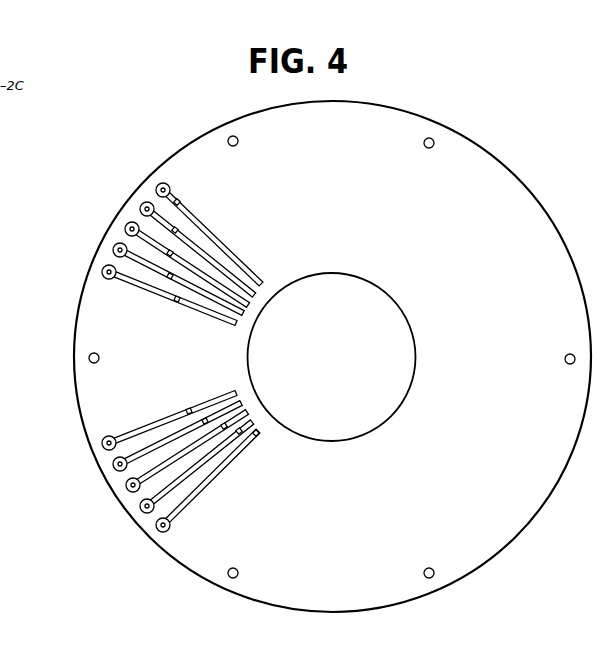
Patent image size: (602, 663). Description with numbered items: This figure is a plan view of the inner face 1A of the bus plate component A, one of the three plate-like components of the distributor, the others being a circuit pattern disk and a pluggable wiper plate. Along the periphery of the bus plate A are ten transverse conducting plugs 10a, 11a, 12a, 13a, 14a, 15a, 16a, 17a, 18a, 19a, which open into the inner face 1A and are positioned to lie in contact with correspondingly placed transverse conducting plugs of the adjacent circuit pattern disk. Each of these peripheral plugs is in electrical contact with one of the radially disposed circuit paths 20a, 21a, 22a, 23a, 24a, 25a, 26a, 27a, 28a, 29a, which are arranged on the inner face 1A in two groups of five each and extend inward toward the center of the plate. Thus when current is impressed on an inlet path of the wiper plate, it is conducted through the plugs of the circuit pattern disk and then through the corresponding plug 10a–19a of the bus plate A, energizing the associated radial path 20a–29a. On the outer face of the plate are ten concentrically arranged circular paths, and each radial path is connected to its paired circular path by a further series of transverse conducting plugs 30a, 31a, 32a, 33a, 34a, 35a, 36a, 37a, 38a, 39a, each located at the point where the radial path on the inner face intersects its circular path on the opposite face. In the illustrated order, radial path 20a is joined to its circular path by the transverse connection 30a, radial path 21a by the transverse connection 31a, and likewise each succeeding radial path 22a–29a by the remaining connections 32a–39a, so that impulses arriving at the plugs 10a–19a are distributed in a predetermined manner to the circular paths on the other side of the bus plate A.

The bus plate component A is at (491, 149).
The inner face of the bus plate 1A is at (528, 222).
The transverse conducting plug 10a is at (160, 184).
The transverse conducting plug 11a is at (141, 204).
The transverse conducting plug 12a is at (126, 226).
The transverse conducting plug 13a is at (114, 248).
The transverse conducting plug 14a is at (102, 272).
The transverse conducting plug 15a is at (103, 446).
The transverse conducting plug 16a is at (114, 467).
The transverse conducting plug 17a is at (127, 489).
The transverse conducting plug 18a is at (141, 512).
The transverse conducting plug 19a is at (159, 532).
The radially disposed circuit path 20a is at (172, 196).
The radially disposed circuit path 21a is at (172, 228).
The radially disposed circuit path 22a is at (159, 243).
The radially disposed circuit path 23a is at (153, 263).
The radially disposed circuit path 24a is at (128, 281).
The radially disposed circuit path 25a is at (121, 437).
The radially disposed circuit path 26a is at (132, 458).
The radially disposed circuit path 27a is at (140, 478).
The radially disposed circuit path 28a is at (155, 499).
The radially disposed circuit path 29a is at (173, 512).
The transverse connection 30a is at (182, 202).
The transverse connection 31a is at (178, 229).
The transverse connection 32a is at (175, 252).
The transverse connection 33a is at (175, 275).
The transverse connection 34a is at (177, 303).
The transverse connection 35a is at (187, 408).
The transverse connection 36a is at (203, 418).
The transverse connection 37a is at (222, 423).
The transverse connection 38a is at (238, 428).
The transverse connection 39a is at (257, 435).